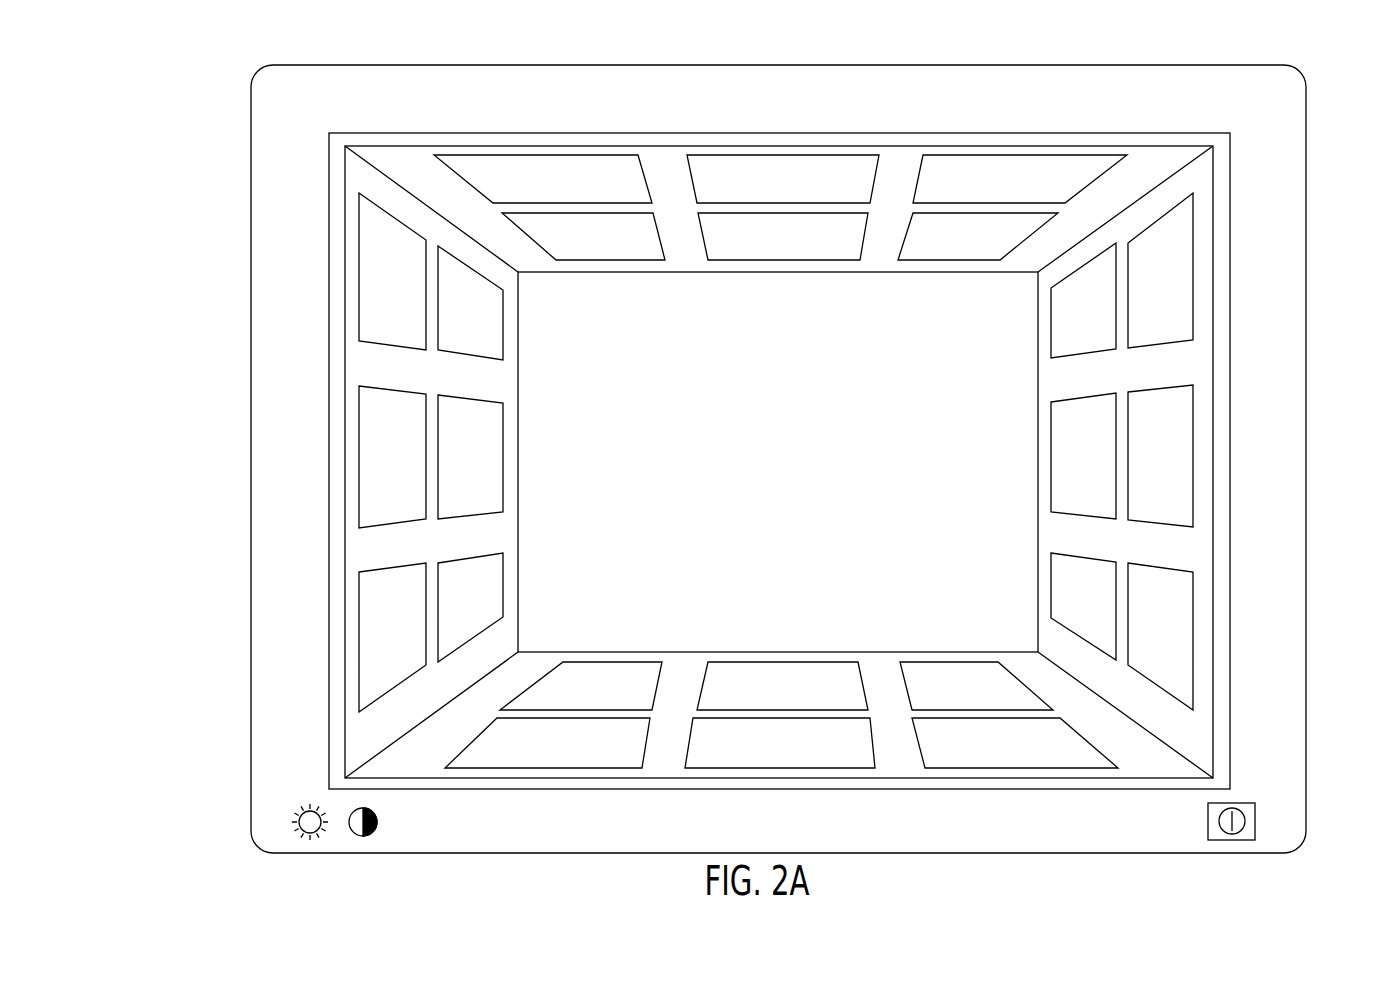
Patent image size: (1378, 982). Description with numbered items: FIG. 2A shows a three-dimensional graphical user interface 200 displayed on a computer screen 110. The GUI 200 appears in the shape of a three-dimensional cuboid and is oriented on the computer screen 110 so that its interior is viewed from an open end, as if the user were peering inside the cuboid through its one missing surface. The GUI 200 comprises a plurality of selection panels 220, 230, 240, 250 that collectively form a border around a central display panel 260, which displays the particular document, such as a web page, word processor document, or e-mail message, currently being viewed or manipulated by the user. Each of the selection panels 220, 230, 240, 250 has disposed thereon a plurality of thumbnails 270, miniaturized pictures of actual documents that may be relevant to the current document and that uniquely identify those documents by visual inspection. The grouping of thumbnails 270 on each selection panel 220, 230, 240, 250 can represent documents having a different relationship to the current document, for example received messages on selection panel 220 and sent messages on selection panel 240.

The computer screen 110 is at (273, 687).
The graphical user interface 200 is at (327, 296).
The selection panel 220 is at (358, 178).
The selection panel 230 is at (1180, 158).
The selection panel 240 is at (1193, 177).
The selection panel 250 is at (1162, 762).
The display panel 260 is at (620, 553).
The thumbnail 270 is at (703, 162).